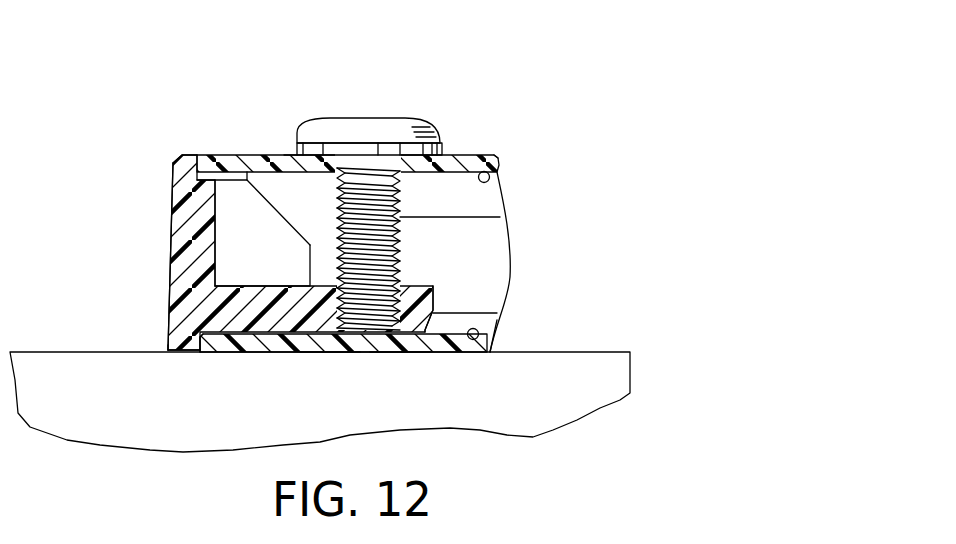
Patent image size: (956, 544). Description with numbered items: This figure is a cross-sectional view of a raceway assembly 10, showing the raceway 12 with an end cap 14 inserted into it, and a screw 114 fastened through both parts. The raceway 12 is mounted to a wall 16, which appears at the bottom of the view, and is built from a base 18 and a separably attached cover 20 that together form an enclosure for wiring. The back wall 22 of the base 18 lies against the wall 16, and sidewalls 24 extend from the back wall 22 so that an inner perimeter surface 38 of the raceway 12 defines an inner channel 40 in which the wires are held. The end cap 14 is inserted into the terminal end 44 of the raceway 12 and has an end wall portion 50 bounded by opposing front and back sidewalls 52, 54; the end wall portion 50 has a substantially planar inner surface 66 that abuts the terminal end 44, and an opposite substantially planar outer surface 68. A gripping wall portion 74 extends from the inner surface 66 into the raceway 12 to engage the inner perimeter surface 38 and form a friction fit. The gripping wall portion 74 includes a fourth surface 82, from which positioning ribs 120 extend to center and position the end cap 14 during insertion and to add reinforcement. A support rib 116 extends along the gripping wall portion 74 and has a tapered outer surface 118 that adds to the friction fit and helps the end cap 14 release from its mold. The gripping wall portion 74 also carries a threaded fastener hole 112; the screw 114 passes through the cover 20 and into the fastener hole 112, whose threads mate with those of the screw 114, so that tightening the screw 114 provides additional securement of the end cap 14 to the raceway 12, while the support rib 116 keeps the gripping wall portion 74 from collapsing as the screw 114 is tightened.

The raceway assembly 10 is at (553, 68).
The raceway 12 is at (271, 124).
The end cap 14 is at (140, 297).
The wall 16 is at (563, 407).
The base 18 is at (330, 353).
The cover 20 is at (284, 152).
The back wall 22 is at (397, 353).
The sidewalls 24 is at (487, 252).
The inner perimeter surface 38 is at (484, 157).
The inner channel 40 is at (512, 318).
The terminal end 44 is at (187, 353).
The end wall portion 50 is at (150, 227).
The front sidewall 52 is at (185, 154).
The back sidewall 54 is at (173, 353).
The inner surface 66 is at (210, 166).
The outer surface 68 is at (170, 250).
The gripping wall portion 74 is at (260, 176).
The fourth surface 82 is at (322, 283).
The fastener hole 112 is at (403, 277).
The screw 114 is at (410, 130).
The support rib 116 is at (433, 307).
The outer surface of support rib 118 is at (241, 353).
The positioning ribs 120 is at (243, 218).